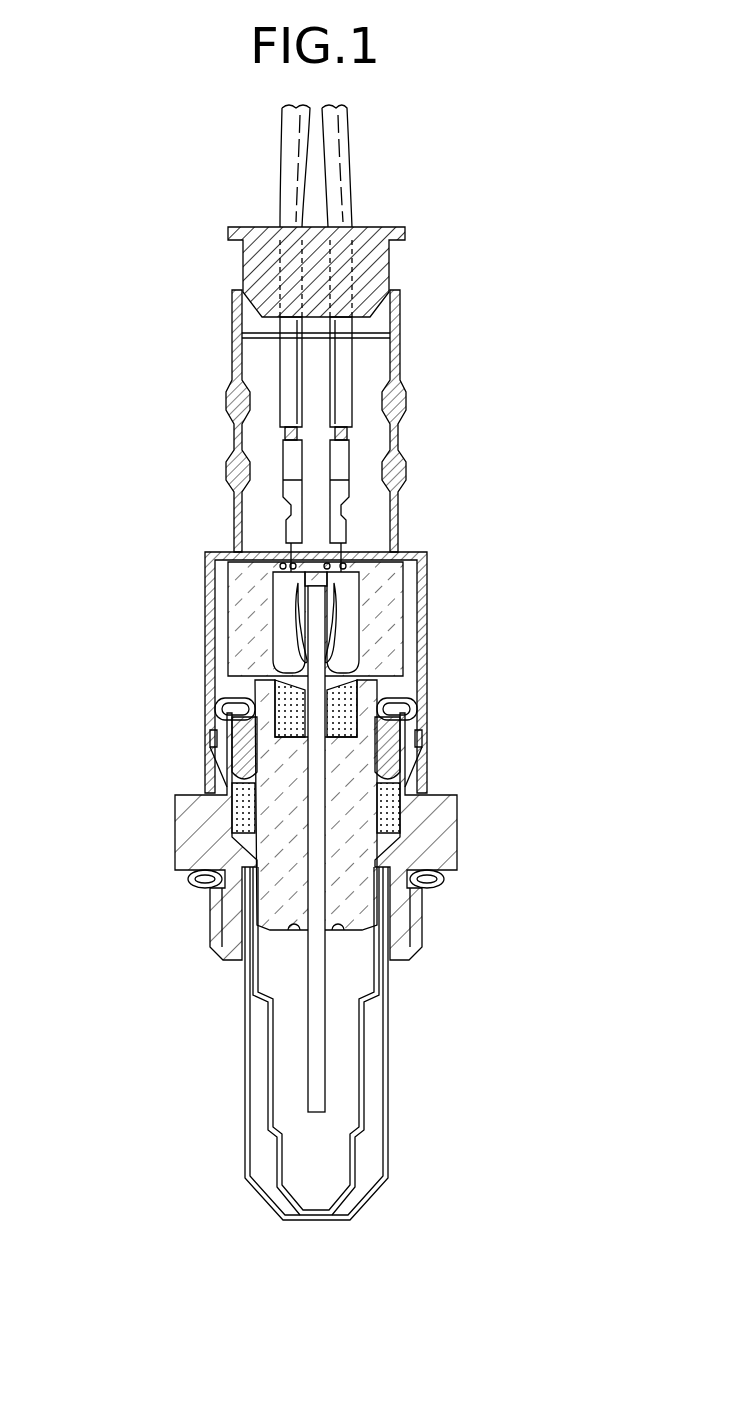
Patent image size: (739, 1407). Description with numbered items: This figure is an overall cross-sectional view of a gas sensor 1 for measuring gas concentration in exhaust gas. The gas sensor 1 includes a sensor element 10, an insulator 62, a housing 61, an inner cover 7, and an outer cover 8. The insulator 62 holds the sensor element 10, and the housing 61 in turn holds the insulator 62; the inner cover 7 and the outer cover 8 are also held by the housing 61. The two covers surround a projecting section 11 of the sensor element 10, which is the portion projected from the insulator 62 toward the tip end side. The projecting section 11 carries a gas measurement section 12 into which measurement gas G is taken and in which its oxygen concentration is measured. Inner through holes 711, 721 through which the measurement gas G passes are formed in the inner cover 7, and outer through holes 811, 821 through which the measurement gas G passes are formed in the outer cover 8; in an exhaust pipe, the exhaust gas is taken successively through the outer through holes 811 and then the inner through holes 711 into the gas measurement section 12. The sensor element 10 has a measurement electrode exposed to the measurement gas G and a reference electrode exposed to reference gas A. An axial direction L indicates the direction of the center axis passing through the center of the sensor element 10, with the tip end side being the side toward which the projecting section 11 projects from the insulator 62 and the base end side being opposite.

The gas sensor 1 is at (443, 250).
The sensor element 10 is at (422, 869).
The projecting section 11 is at (420, 869).
The gas measurement section 12 is at (318, 1083).
The housing 61 is at (198, 833).
The insulator 62 is at (358, 848).
The inner cover 7 is at (328, 1090).
The inner through holes 711 is at (366, 1022).
The inner through holes 721 is at (318, 1222).
The outer cover 8 is at (331, 1090).
The outer through holes 811 is at (388, 1157).
The outer through holes 821 is at (337, 1222).
The reference gas A is at (363, 372).
The measurement gas G is at (290, 1026).
The axial direction L is at (570, 943).